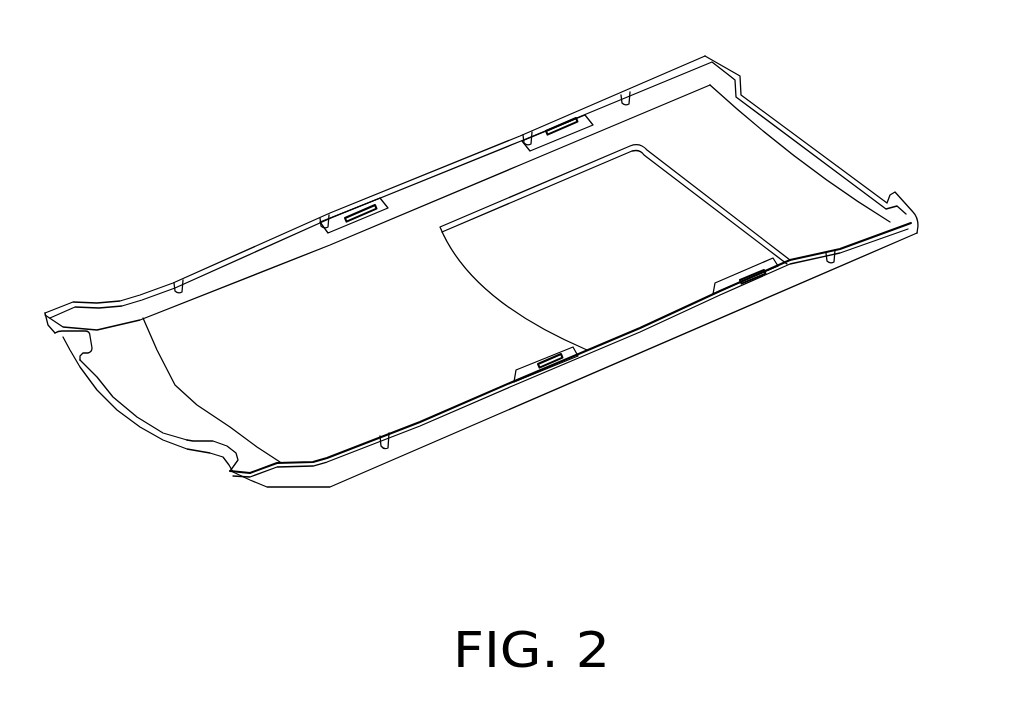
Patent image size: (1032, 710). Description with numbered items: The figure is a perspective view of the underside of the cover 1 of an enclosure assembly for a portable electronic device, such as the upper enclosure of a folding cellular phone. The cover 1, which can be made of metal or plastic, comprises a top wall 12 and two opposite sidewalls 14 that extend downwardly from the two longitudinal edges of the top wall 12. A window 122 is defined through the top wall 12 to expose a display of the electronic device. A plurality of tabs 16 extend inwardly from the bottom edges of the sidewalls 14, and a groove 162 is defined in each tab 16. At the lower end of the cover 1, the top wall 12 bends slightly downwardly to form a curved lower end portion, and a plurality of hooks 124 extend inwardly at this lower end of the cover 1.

The cover 1 is at (462, 150).
The top wall 12 is at (260, 307).
The window 122 is at (610, 308).
The hooks 124 is at (220, 452).
The sidewalls 14 is at (678, 87).
The tabs 16 is at (727, 285).
The groove 162 is at (777, 272).